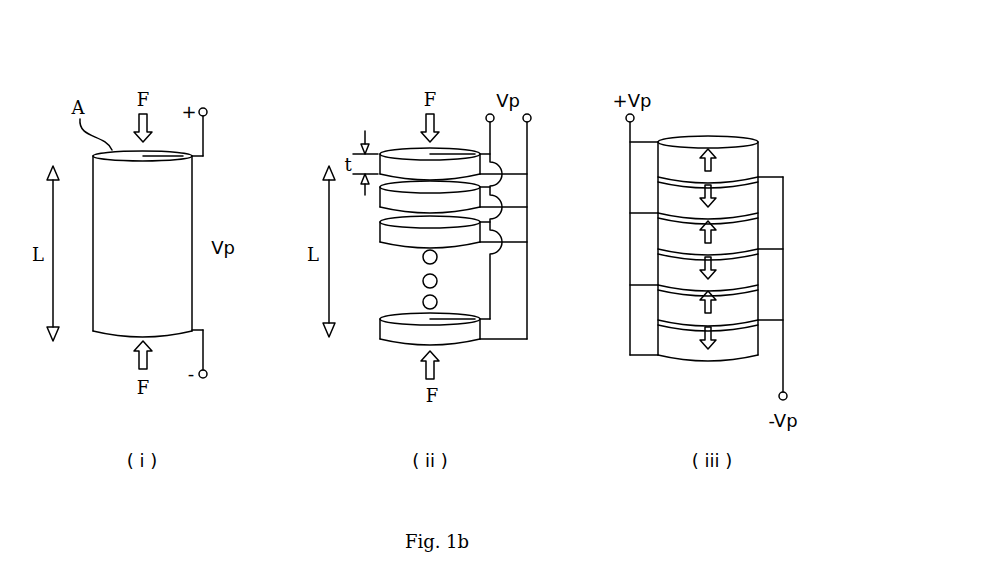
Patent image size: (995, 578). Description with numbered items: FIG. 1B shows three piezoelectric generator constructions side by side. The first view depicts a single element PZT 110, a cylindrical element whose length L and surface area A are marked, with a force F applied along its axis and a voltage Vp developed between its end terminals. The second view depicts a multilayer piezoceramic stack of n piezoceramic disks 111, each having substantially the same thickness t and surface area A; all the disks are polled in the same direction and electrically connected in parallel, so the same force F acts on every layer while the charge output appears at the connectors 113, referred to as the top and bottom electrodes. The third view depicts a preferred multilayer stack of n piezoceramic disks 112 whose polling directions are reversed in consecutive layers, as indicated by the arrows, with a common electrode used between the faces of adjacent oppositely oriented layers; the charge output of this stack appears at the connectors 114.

The single element PZT 110 is at (192, 303).
The piezoceramic disks 111 is at (413, 152).
The piezoceramic disks 112 is at (762, 162).
The connectors 113 is at (486, 115).
The connectors 114 is at (637, 123).